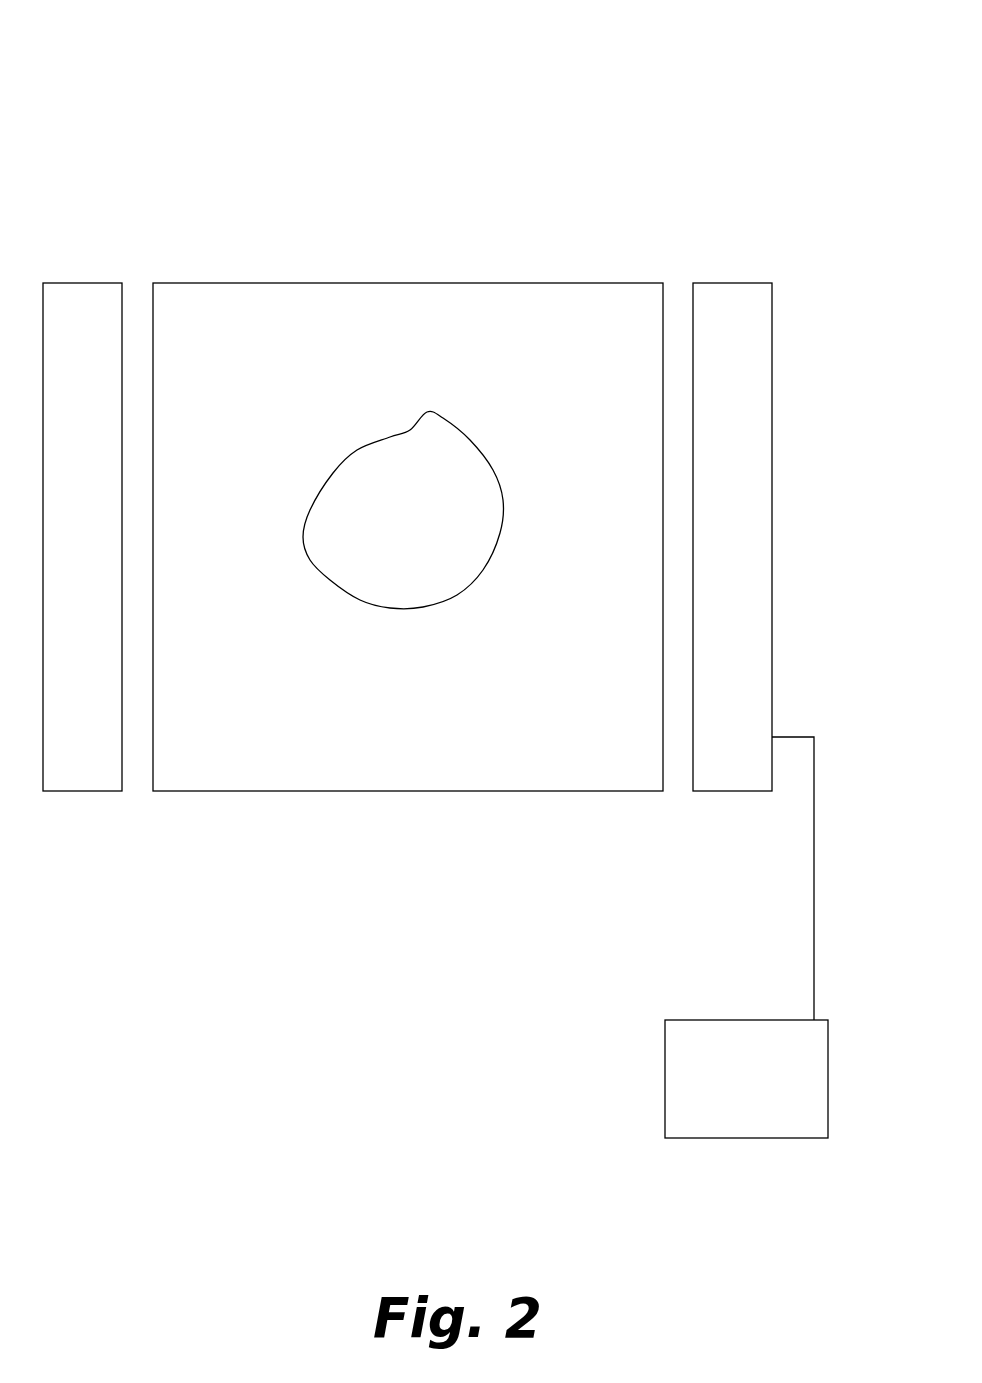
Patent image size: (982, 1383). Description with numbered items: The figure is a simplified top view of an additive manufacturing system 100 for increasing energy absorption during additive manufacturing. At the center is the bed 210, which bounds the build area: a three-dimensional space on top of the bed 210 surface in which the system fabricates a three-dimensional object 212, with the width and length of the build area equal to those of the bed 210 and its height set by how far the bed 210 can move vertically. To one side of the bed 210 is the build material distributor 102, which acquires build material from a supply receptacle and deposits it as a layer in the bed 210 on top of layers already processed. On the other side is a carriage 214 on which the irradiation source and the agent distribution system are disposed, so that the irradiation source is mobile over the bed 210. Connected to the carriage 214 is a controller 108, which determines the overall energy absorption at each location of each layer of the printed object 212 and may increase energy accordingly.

The additive manufacturing system 100 is at (251, 97).
The build material distributor 102 is at (58, 305).
The controller 108 is at (767, 1105).
The bed 210 is at (352, 323).
The 3D object 212 is at (411, 593).
The carriage 214 is at (733, 307).